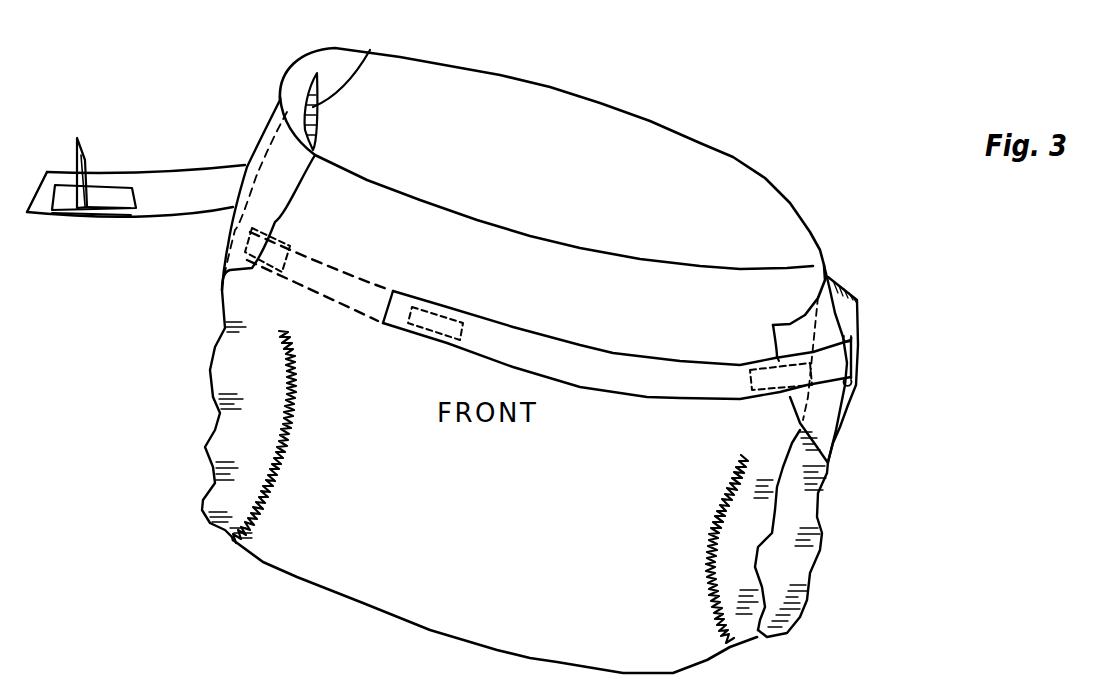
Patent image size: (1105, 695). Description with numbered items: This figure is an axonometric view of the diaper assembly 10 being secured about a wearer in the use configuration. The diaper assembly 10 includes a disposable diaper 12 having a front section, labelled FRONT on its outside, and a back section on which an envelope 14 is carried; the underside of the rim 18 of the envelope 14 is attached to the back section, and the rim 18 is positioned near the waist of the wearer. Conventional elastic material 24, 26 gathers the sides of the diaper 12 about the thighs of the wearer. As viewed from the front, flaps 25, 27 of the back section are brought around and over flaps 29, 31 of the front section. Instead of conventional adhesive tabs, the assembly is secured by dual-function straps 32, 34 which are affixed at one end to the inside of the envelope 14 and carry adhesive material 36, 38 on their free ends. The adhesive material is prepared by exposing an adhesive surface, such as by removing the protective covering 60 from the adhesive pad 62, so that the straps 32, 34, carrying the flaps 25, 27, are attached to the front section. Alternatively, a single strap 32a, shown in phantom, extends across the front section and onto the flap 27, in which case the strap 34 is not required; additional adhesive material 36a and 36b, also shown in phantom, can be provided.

The diaper assembly 10 is at (829, 29).
The disposable diaper 12 is at (296, 579).
The envelope 14 is at (850, 434).
The rim 18 is at (866, 359).
The elastic material 24 is at (713, 590).
The flap 25 is at (790, 403).
The elastic material 26 is at (284, 470).
The flap 27 is at (283, 192).
The flap 29 is at (785, 283).
The flap 31 is at (370, 50).
The strap 32 is at (607, 367).
The strap 32a is at (392, 287).
The strap 34 is at (194, 188).
The adhesive material 36 is at (413, 323).
The adhesive material 36a is at (277, 240).
The adhesive material 36b is at (777, 357).
The adhesive material 38 is at (111, 196).
The protective covering 60 is at (77, 160).
The adhesive pad 62 is at (65, 203).